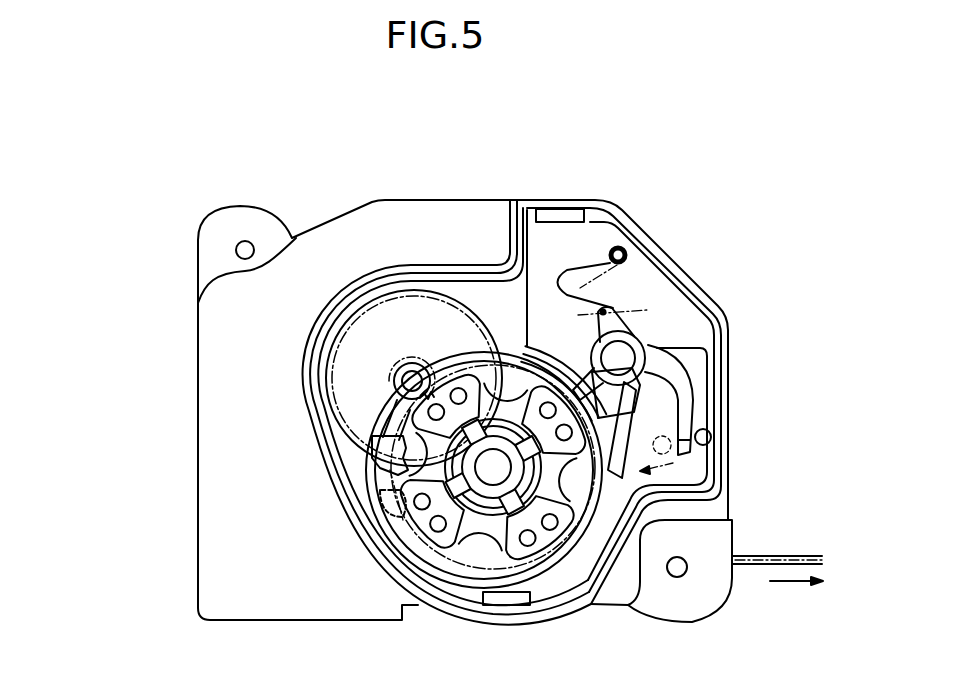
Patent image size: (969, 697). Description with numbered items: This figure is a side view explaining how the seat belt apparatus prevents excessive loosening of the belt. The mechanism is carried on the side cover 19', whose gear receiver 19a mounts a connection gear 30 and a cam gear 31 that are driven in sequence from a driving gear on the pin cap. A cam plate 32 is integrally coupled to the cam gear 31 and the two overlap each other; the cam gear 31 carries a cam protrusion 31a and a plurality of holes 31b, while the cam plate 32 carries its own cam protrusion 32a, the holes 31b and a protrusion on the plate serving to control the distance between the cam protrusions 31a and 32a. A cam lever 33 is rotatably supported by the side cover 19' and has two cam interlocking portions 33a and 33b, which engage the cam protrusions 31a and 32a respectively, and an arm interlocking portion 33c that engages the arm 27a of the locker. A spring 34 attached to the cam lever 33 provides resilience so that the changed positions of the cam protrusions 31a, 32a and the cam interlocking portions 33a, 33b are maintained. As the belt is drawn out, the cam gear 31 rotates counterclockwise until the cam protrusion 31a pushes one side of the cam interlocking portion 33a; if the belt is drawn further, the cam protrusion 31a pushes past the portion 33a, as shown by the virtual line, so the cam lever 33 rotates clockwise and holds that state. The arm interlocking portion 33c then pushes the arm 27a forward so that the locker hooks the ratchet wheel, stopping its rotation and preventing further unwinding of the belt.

The side cover 19' is at (468, 411).
The gear receiver 19a is at (438, 265).
The connection gear 30 is at (378, 307).
The spring 34 is at (572, 282).
The cam lever 33 is at (640, 350).
The cam interlocking portion 33a is at (573, 360).
The cam interlocking portion 33b is at (603, 425).
The arm interlocking portion 33c is at (690, 365).
The cam protrusion 31a is at (655, 427).
The arm 27a is at (712, 440).
The cam protrusion 32a is at (380, 457).
The cam gear 31 is at (447, 553).
The cam plate 32 is at (480, 550).
The holes 31b is at (530, 545).